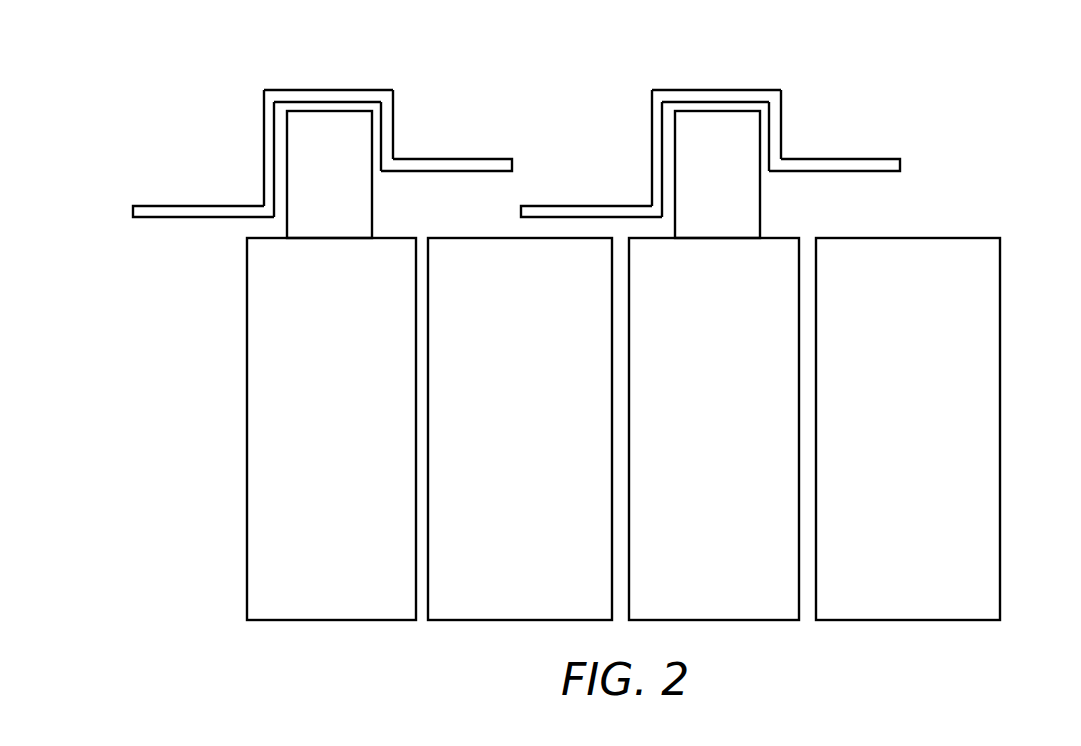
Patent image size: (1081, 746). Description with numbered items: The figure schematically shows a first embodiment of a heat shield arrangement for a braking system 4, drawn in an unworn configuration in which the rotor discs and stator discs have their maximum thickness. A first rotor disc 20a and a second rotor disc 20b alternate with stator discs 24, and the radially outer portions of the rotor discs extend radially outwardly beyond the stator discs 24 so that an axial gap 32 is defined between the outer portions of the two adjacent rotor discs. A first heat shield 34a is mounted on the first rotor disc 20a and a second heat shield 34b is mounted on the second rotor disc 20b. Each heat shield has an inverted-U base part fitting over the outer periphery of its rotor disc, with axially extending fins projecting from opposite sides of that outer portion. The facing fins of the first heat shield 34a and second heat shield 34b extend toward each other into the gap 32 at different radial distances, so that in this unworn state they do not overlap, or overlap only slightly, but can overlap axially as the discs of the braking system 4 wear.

The braking system 4 is at (1032, 160).
The first rotor disc 20a is at (352, 438).
The second rotor disc 20b is at (733, 438).
The stator disc 24 is at (533, 438).
The axial gap 32 is at (540, 63).
The first heat shield 34a is at (295, 89).
The second heat shield 34b is at (683, 89).